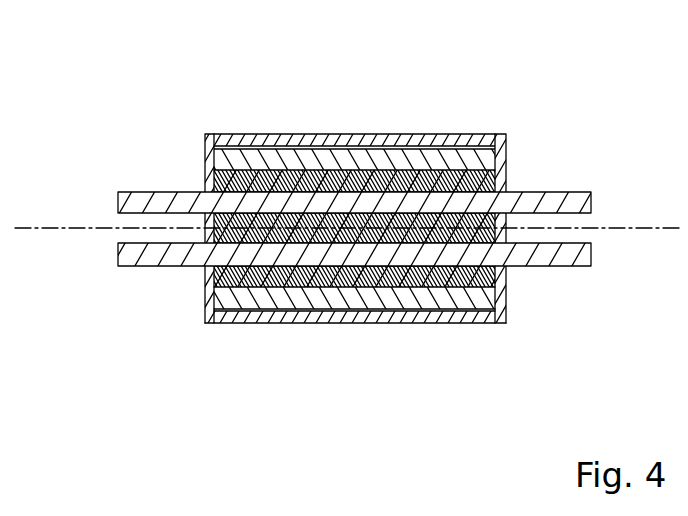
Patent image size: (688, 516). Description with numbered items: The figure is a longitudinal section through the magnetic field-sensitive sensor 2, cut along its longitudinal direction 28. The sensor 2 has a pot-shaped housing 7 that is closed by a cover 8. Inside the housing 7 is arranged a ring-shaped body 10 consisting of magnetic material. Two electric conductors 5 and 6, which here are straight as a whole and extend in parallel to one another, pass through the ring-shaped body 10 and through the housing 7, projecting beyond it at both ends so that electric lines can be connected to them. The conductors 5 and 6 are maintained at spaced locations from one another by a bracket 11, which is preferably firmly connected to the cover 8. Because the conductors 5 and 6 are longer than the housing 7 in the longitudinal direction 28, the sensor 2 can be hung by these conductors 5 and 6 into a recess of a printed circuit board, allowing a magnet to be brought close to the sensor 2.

The magnetic field-sensitive sensor 2 is at (349, 210).
The electric conductor 5 is at (575, 257).
The electric conductor 6 is at (575, 203).
The housing 7 is at (276, 316).
The cover 8 is at (498, 302).
The ring-shaped body 10 is at (291, 158).
The bracket 11 is at (478, 182).
The longitudinal direction 28 is at (61, 227).